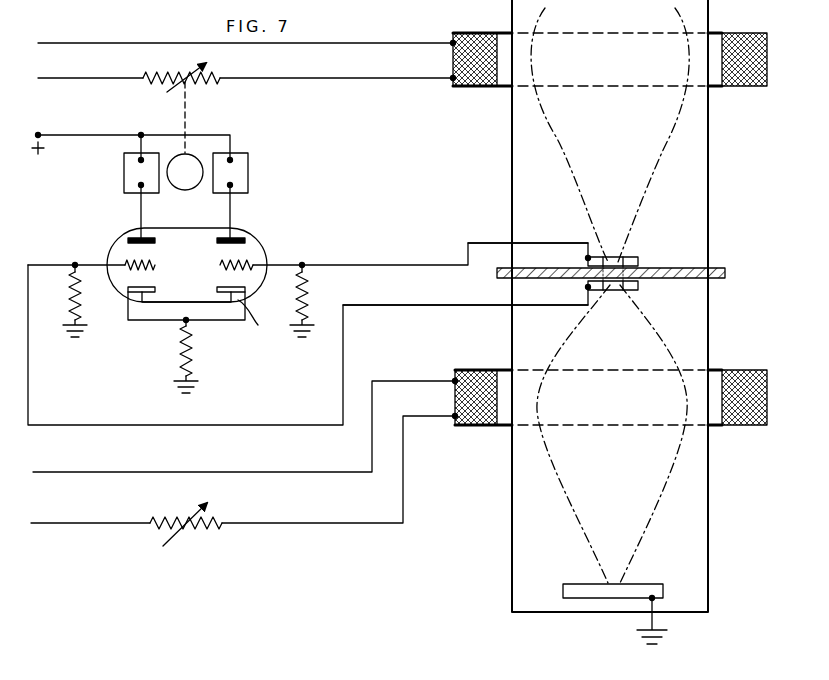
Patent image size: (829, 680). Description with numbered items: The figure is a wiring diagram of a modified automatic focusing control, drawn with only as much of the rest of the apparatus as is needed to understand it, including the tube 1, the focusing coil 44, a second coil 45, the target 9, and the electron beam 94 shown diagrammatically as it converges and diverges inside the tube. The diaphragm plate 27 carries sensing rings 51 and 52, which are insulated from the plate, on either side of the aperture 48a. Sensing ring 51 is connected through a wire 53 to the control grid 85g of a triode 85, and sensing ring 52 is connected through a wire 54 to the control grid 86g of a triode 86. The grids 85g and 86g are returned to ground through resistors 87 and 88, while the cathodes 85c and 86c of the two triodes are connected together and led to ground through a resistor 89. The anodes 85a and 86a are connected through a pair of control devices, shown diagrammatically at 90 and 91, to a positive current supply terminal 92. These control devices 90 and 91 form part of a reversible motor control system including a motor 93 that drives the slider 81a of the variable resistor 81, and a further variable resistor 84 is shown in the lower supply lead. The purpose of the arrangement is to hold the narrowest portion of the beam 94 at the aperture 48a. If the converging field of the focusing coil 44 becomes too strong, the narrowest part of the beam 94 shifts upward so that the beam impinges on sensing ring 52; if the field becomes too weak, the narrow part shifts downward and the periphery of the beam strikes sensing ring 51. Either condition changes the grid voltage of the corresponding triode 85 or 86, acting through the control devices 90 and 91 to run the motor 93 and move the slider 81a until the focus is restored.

The cathode ray tube 1 is at (504, 158).
The target 9 is at (590, 598).
The diaphragm plate 27 is at (725, 275).
The focusing coil 44 is at (485, 82).
The lower deflection coil 45 is at (485, 425).
The aperture 48a is at (617, 290).
The sensing ring 51 is at (632, 257).
The sensing ring 52 is at (634, 290).
The wire 53 is at (560, 243).
The wire 54 is at (562, 305).
The variable resistor 81 is at (205, 84).
The slider 81a is at (203, 66).
The variable resistor 84 is at (203, 525).
The triode 85 is at (267, 234).
The anode 85a is at (232, 234).
The cathode 85c is at (259, 319).
The control grid 85g is at (250, 262).
The triode 86 is at (103, 232).
The anode 86a is at (140, 234).
The cathode 86c is at (129, 312).
The control grid 86g is at (124, 262).
The resistor 87 is at (308, 290).
The resistor 88 is at (70, 305).
The resistor 89 is at (192, 356).
The control device 90 is at (248, 176).
The control device 91 is at (124, 176).
The positive current supply terminal 92 is at (36, 115).
The motor 93 is at (185, 190).
The electron beam 94 is at (668, 136).